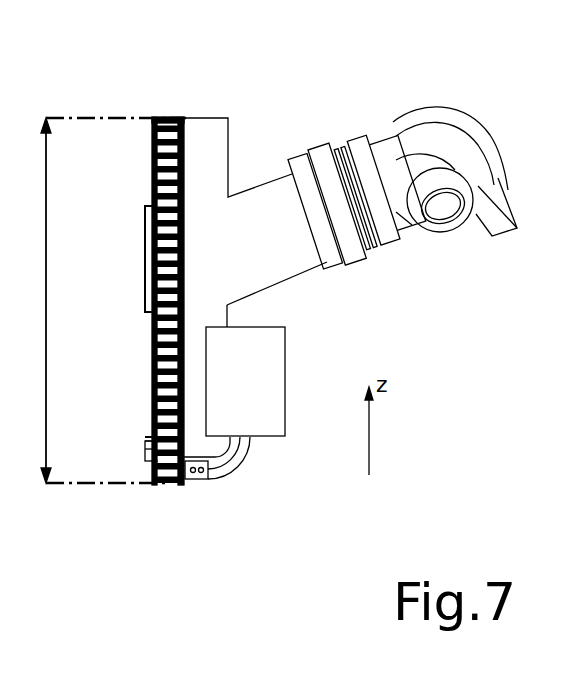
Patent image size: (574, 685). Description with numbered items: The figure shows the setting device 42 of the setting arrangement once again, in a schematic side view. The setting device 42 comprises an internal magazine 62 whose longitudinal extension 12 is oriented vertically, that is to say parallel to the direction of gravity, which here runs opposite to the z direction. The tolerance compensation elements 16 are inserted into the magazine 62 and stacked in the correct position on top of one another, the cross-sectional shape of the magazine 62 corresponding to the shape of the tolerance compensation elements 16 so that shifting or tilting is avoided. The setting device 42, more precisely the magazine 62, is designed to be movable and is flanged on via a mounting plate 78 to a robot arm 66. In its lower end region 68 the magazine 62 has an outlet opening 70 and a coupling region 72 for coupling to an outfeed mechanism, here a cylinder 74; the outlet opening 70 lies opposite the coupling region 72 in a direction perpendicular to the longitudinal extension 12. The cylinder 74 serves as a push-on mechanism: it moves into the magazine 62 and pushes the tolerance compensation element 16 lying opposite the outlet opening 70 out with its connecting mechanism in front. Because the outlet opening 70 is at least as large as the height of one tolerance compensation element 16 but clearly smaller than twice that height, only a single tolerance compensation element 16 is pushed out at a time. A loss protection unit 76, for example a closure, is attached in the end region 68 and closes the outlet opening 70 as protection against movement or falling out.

The longitudinal extension 12 is at (101, 300).
The setting device 42 is at (152, 106).
The magazine 62 is at (152, 172).
The tolerance compensation elements 16 is at (154, 327).
The mounting plate 78 is at (204, 142).
The robot arm 66 is at (258, 197).
The loss protection unit 76 is at (147, 437).
The end region 68 is at (138, 451).
The outlet opening 70 is at (156, 468).
The coupling region 72 is at (192, 480).
The cylinder 74 is at (200, 480).